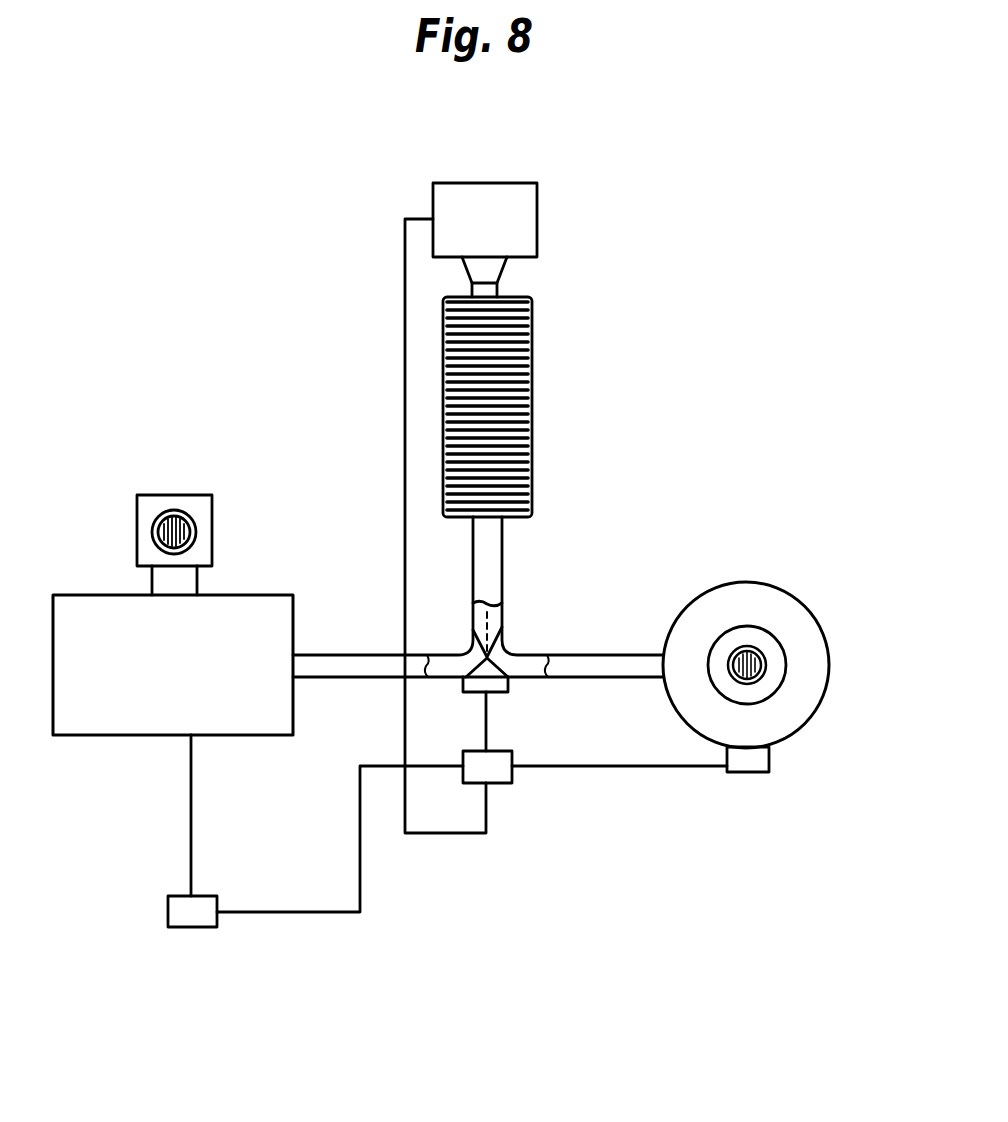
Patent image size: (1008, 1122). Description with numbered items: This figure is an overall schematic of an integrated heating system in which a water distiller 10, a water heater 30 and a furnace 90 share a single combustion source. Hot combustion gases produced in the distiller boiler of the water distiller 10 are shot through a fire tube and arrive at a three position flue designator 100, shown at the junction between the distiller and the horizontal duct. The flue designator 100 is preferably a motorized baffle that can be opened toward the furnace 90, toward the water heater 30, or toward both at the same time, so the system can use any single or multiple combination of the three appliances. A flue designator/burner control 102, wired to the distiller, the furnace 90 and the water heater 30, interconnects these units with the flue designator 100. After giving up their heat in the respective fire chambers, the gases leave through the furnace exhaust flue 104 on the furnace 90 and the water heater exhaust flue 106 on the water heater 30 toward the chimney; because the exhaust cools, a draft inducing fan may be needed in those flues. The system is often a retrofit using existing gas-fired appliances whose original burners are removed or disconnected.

The water distiller 10 is at (533, 366).
The water heater 30 is at (706, 580).
The furnace 90 is at (257, 593).
The three position flue designator 100 is at (497, 643).
The flue designator/burner control 102 is at (492, 772).
The furnace exhaust flue 104 is at (202, 522).
The water heater exhaust flue 106 is at (753, 673).